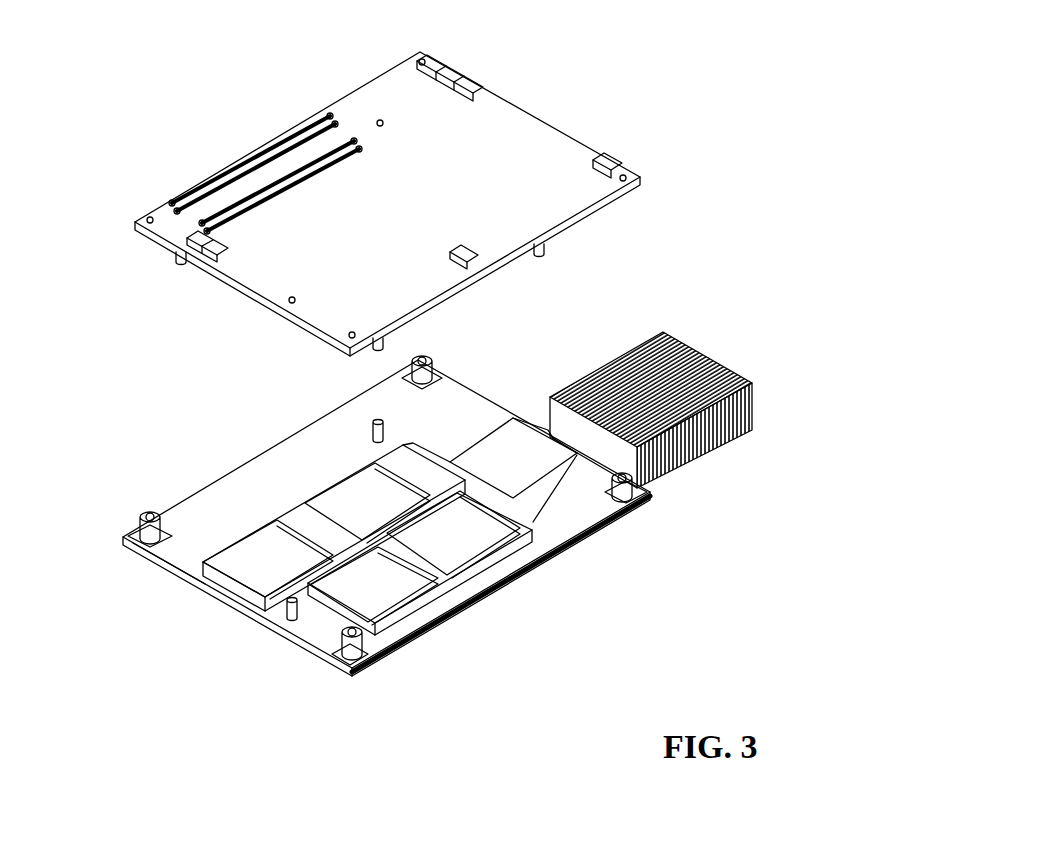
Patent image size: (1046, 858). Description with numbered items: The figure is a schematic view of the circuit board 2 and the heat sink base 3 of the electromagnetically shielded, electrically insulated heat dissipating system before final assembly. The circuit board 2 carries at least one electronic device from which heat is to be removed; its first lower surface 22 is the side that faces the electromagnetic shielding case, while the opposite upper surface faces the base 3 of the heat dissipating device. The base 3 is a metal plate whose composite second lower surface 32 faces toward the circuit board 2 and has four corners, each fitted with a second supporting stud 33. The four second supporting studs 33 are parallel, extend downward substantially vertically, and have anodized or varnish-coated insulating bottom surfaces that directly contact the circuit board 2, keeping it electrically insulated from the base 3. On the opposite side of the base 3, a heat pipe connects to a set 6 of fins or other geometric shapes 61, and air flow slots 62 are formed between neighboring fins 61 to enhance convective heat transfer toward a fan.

The circuit board 2 is at (453, 188).
The first lower surface 22 is at (533, 143).
The heat sink base 3 is at (465, 524).
The second lower surface 32 is at (190, 553).
The second supporting stud 33 is at (443, 360).
The set of fins 6 is at (717, 434).
The fins 61 is at (693, 467).
The air flow slots 62 is at (727, 447).